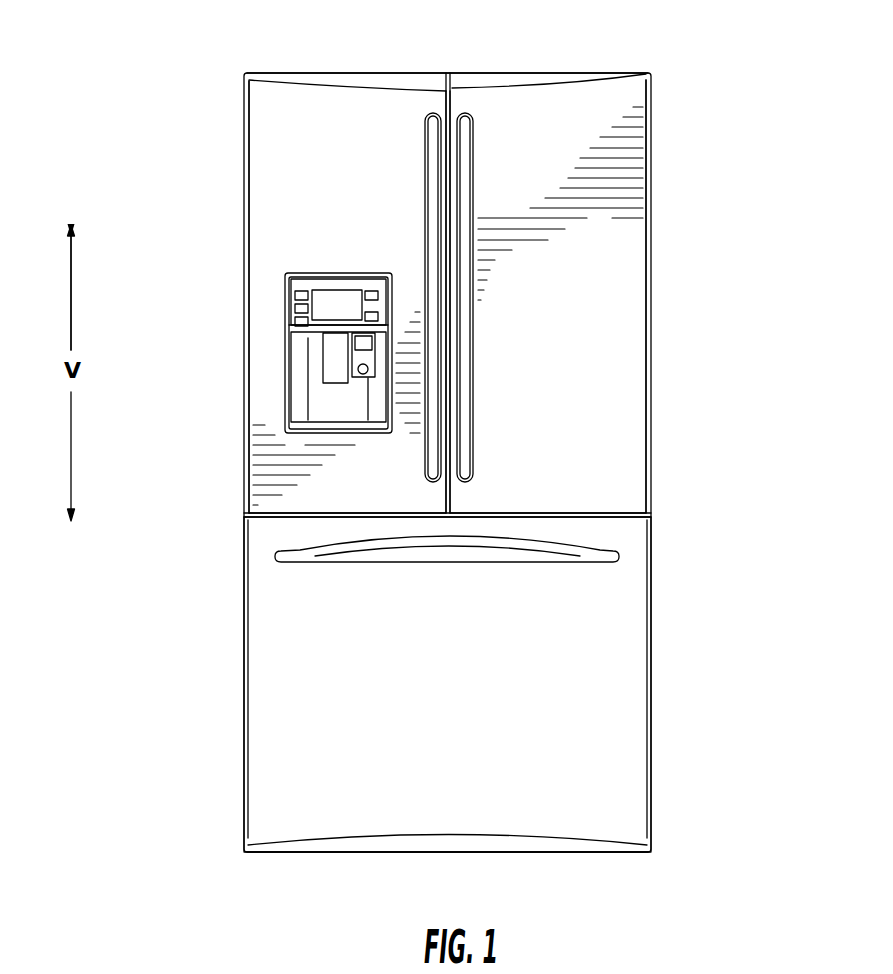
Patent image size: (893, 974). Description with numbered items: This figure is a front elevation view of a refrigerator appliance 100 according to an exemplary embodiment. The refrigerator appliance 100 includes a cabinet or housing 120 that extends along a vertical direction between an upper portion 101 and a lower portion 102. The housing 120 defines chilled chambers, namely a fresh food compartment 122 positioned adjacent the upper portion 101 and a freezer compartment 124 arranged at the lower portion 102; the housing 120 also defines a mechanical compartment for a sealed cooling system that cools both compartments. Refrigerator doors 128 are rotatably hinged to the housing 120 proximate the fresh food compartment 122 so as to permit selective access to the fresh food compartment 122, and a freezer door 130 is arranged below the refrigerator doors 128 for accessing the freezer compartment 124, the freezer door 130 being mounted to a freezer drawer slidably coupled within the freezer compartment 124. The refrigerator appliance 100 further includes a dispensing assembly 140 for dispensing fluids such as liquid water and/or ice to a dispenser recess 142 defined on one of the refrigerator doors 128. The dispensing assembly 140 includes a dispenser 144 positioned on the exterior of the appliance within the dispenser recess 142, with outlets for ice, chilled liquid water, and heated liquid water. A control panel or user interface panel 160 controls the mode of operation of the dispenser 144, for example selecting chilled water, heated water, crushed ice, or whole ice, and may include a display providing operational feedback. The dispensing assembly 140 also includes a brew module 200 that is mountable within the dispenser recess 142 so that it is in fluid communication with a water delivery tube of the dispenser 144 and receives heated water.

The refrigerator appliance 100 is at (157, 86).
The upper portion 101 is at (657, 77).
The lower portion 102 is at (657, 838).
The cabinet or housing 120 is at (653, 515).
The fresh food compartment 122 is at (598, 370).
The freezer compartment 124 is at (598, 650).
The refrigerator doors 128 is at (287, 149).
The freezer door 130 is at (312, 667).
The dispensing assembly 140 is at (269, 346).
The dispenser recess 142 is at (306, 387).
The dispenser 144 is at (297, 273).
The control panel or user interface panel 160 is at (355, 289).
The brew module 200 is at (372, 362).